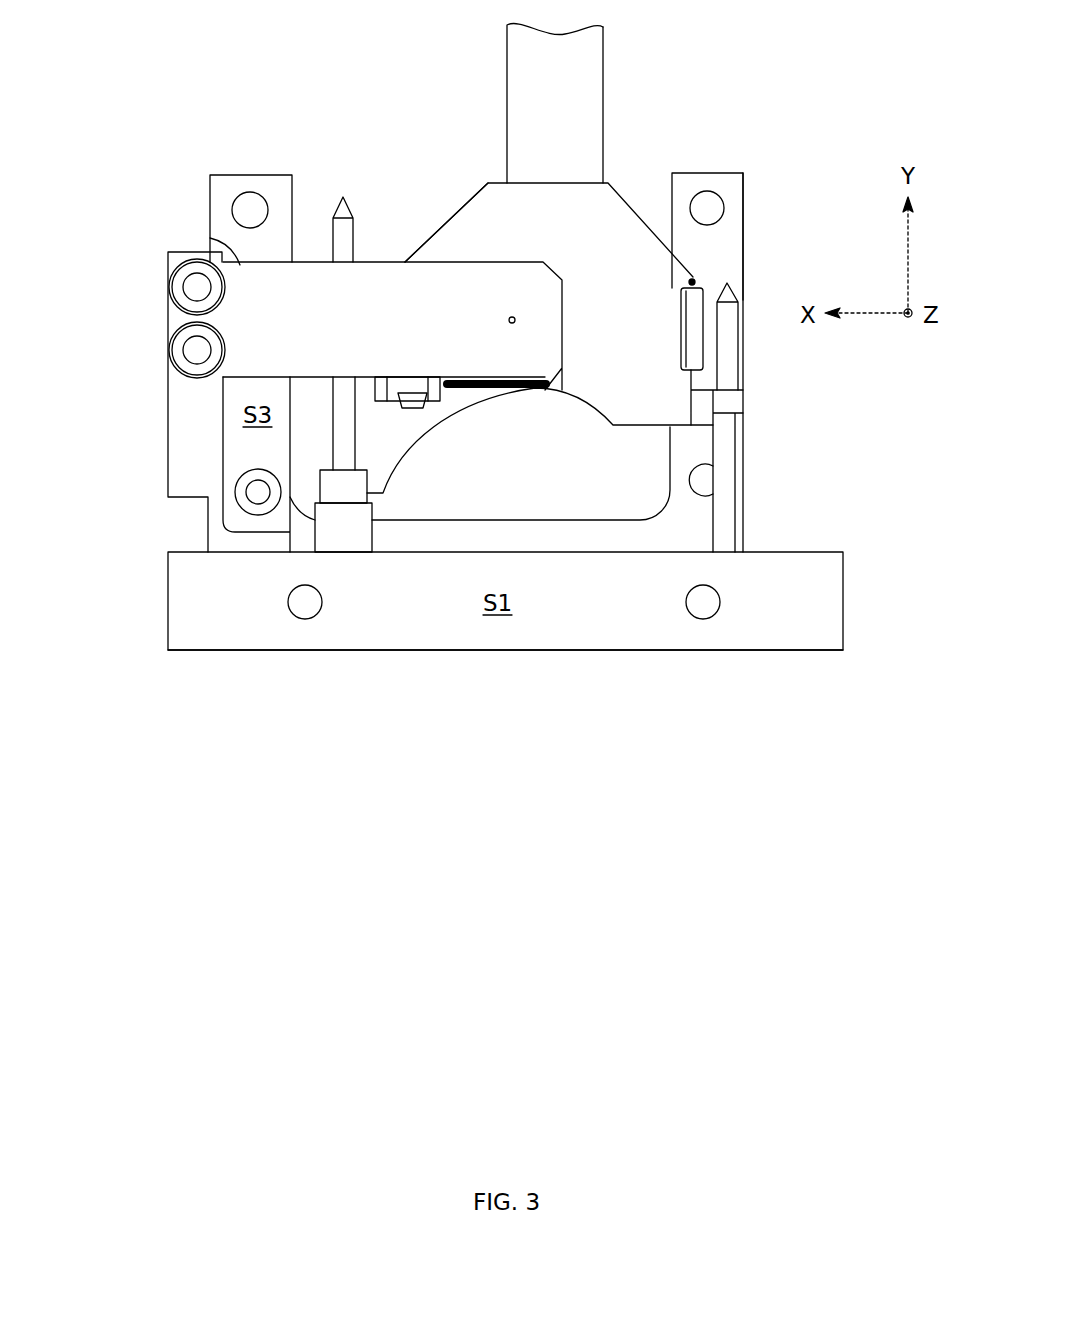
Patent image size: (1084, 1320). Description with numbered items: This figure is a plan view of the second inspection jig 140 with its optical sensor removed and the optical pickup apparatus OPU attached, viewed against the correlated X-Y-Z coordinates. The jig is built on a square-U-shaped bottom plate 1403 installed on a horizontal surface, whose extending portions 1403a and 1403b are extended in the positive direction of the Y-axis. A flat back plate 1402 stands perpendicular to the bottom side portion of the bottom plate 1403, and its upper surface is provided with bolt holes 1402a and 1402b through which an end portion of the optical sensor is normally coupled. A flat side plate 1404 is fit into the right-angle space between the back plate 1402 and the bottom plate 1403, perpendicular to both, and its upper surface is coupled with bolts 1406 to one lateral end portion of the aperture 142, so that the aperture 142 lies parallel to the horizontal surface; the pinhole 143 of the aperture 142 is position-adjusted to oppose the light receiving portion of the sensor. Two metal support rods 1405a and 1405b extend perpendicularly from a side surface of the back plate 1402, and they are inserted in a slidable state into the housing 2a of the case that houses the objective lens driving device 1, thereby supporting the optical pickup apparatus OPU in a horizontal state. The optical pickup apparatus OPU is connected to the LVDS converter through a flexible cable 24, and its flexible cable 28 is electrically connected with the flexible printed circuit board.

The objective lens driving device 1 is at (457, 323).
The housing 2a is at (437, 230).
The flexible cable 24 is at (505, 72).
The flexible cable 28 is at (603, 88).
The second inspection jig 140 is at (500, 665).
The aperture 142 is at (210, 238).
The pinhole 143 is at (512, 317).
The back plate 1402 is at (843, 605).
The bolt hole 1402a is at (307, 607).
The bolt hole 1402b is at (702, 607).
The bottom plate 1403 is at (710, 173).
The extending portion 1403a is at (235, 175).
The extending portion 1403b is at (743, 241).
The side plate 1404 is at (175, 437).
The support rod 1405a is at (344, 197).
The support rod 1405b is at (733, 372).
The bolts 1406 is at (170, 347).
The optical pickup apparatus OPU is at (643, 204).